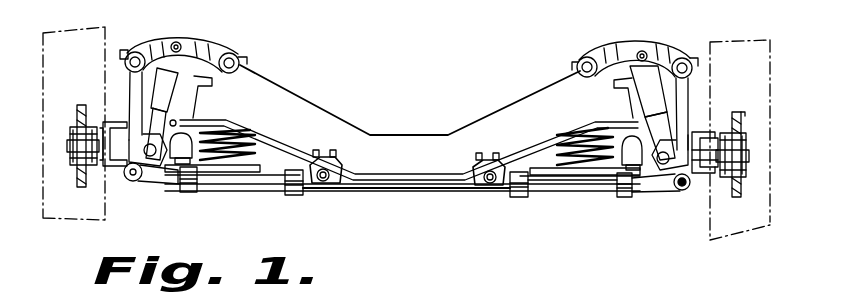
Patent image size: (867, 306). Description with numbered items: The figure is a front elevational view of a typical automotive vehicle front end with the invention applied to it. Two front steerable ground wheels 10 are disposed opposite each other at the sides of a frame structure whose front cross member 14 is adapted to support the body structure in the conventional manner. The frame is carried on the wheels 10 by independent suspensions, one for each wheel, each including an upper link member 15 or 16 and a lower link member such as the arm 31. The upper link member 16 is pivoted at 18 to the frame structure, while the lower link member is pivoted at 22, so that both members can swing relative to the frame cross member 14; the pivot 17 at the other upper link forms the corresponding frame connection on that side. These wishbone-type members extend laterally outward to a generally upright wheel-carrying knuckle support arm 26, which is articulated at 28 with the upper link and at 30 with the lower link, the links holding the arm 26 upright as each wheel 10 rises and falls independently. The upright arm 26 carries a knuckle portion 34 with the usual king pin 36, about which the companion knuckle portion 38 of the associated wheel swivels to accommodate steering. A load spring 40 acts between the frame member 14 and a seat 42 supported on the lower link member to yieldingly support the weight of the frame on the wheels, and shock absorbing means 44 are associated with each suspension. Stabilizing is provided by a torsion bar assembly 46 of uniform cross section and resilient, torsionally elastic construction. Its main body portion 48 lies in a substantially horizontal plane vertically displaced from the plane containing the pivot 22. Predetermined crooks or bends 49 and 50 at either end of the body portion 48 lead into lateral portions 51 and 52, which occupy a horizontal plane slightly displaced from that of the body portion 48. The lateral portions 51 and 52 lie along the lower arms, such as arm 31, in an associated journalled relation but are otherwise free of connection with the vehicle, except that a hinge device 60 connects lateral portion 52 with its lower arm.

The front steerable ground wheel 10 is at (78, 113).
The front cross member 14 is at (392, 140).
The upper link member 15 is at (198, 48).
The upper link member 16 is at (617, 48).
The bracket pivot bolt 17 is at (239, 60).
The pivot 18 is at (588, 55).
The pivot 22 is at (487, 172).
The knuckle support arm 26 is at (690, 85).
The articulation 28 is at (682, 66).
The articulation 30 is at (682, 191).
The lower link member 31 is at (160, 194).
The knuckle portion 34 is at (703, 150).
The king pin 36 is at (700, 140).
The companion knuckle portion 38 is at (737, 128).
The load spring 40 is at (522, 160).
The seat 42 is at (553, 173).
The shock absorbing means 44 is at (650, 72).
The torsion bar assembly 46 is at (340, 199).
The main body portion 48 is at (425, 192).
The bend 49 is at (300, 194).
The bend 50 is at (510, 193).
The lateral portion 51 is at (245, 190).
The lateral portion 52 is at (585, 191).
The hinge device 60 is at (526, 197).